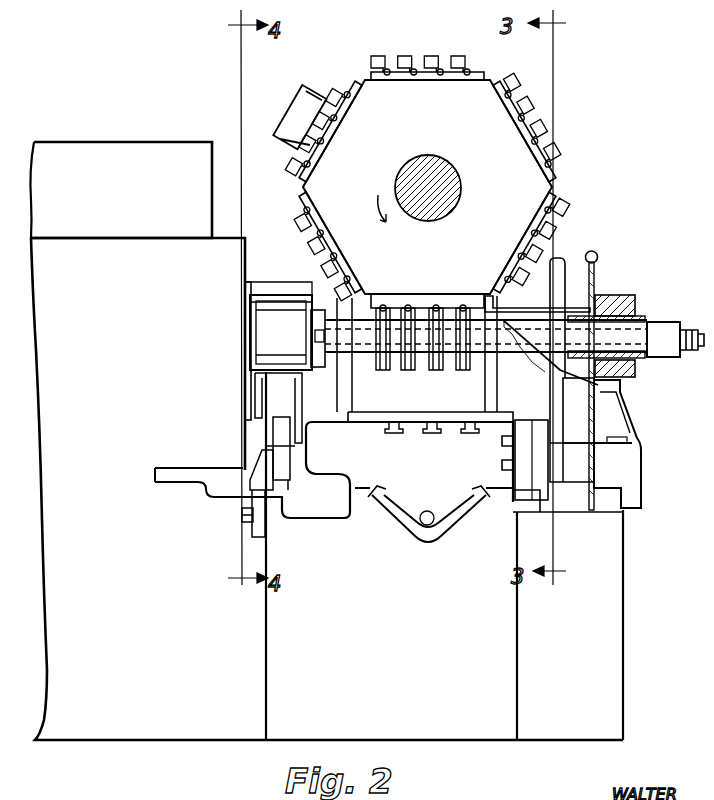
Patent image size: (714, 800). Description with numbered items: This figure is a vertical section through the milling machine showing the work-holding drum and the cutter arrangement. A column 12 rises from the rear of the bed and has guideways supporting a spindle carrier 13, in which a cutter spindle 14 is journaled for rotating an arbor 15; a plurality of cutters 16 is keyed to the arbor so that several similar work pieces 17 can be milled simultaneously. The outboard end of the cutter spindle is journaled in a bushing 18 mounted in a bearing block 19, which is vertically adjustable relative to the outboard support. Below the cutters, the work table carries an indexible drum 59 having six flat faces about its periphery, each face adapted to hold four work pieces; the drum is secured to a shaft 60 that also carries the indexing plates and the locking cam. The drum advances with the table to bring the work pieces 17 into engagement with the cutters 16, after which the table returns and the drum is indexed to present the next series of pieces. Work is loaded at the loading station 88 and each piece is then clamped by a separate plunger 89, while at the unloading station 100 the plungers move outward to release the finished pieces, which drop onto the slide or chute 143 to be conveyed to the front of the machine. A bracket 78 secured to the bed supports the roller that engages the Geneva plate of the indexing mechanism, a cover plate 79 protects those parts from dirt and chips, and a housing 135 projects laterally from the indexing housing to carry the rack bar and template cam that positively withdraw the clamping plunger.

The column 12 is at (146, 732).
The spindle carrier 13 is at (246, 237).
The cutter spindle 14 is at (300, 297).
The housing 135 is at (300, 293).
The arbor 15 is at (507, 354).
The cutters 16 is at (468, 372).
The work pieces 17 is at (384, 298).
The bushing 18 is at (640, 313).
The bearing block 19 is at (633, 294).
The indexible drum 59 is at (490, 80).
The shaft 60 is at (462, 189).
The bracket 78 is at (628, 471).
The cover plate 79 is at (568, 301).
The loading station 88 is at (540, 118).
The plunger 89 is at (568, 152).
The unloading station 100 is at (540, 256).
The slide or chute 143 is at (548, 363).